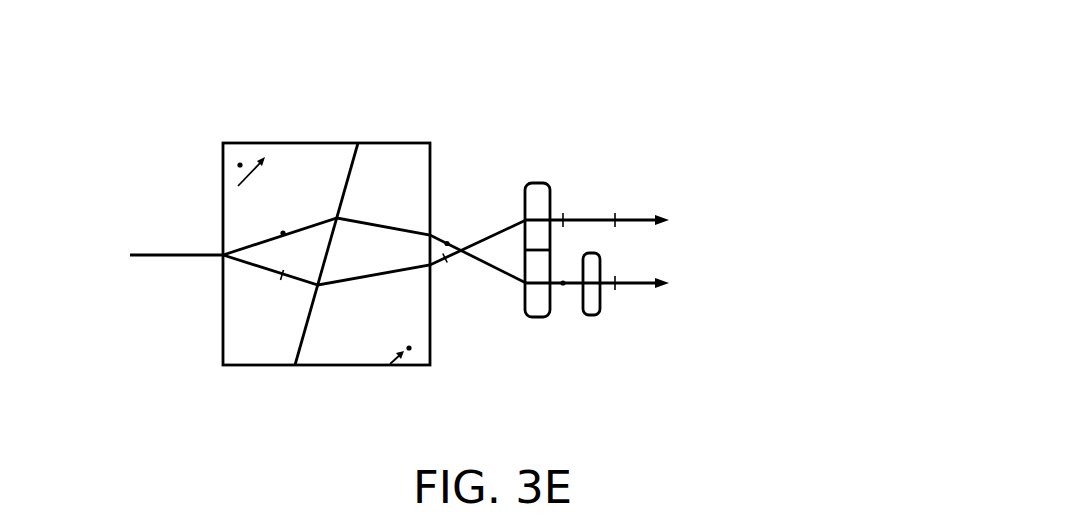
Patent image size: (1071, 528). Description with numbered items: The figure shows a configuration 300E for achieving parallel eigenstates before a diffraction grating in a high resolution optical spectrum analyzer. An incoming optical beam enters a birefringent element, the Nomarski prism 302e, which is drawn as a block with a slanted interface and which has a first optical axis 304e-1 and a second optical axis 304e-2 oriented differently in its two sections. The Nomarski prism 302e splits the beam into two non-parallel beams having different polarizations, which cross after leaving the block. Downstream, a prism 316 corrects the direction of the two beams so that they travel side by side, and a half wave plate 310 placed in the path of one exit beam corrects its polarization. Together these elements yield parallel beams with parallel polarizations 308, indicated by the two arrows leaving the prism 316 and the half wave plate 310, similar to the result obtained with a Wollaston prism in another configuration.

The configuration 300E is at (510, 29).
The Nomarski prism 302e is at (314, 134).
The first optical axis 304e-1 is at (214, 166).
The second optical axis 304e-2 is at (392, 363).
The parallel beams with parallel polarizations 308 is at (743, 265).
The half wave plate 310 is at (607, 322).
The prism 316 is at (539, 330).